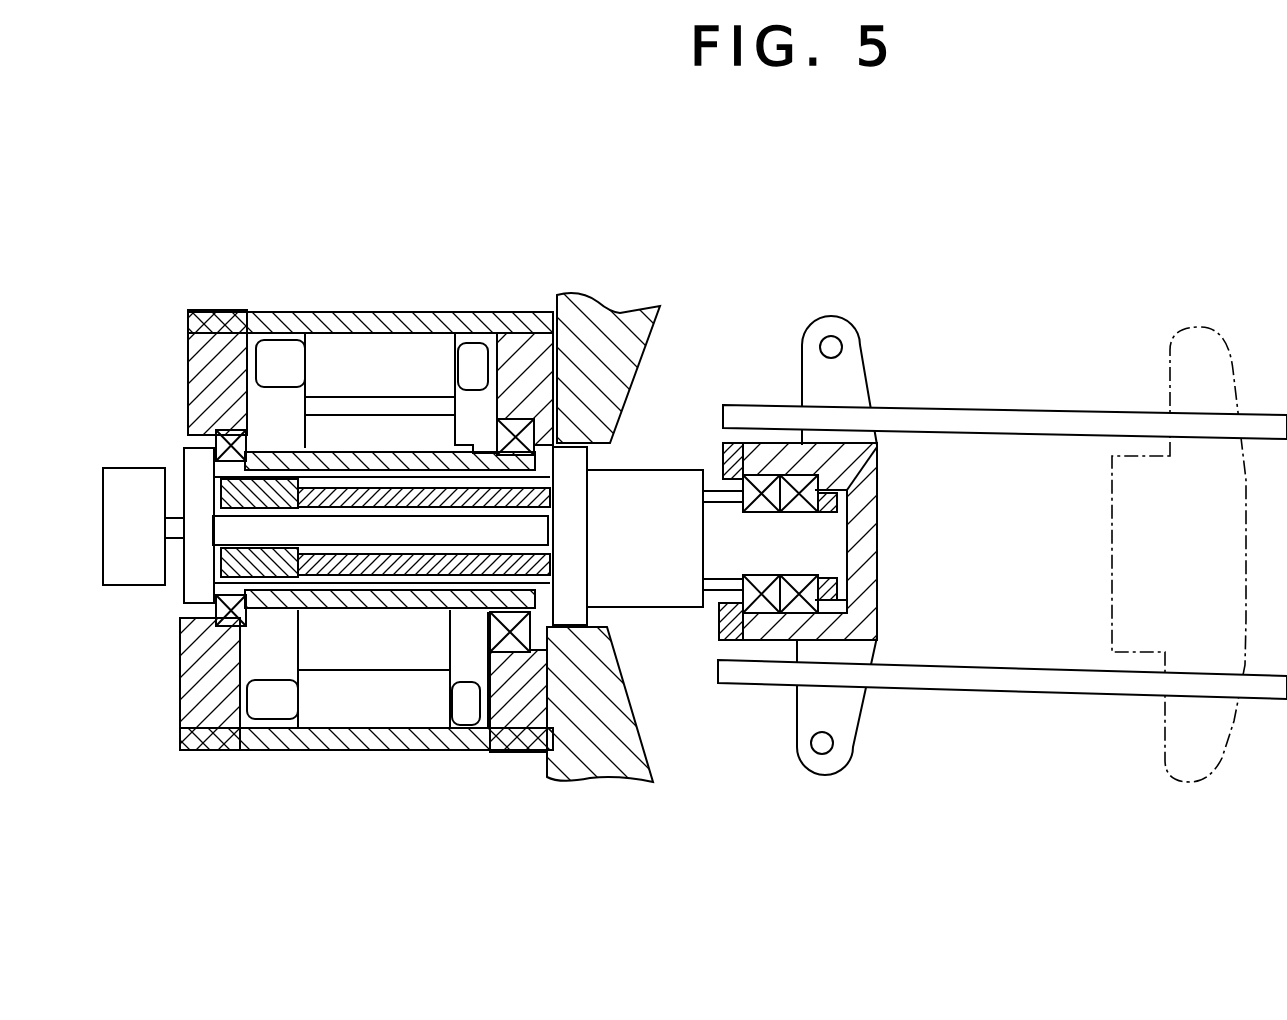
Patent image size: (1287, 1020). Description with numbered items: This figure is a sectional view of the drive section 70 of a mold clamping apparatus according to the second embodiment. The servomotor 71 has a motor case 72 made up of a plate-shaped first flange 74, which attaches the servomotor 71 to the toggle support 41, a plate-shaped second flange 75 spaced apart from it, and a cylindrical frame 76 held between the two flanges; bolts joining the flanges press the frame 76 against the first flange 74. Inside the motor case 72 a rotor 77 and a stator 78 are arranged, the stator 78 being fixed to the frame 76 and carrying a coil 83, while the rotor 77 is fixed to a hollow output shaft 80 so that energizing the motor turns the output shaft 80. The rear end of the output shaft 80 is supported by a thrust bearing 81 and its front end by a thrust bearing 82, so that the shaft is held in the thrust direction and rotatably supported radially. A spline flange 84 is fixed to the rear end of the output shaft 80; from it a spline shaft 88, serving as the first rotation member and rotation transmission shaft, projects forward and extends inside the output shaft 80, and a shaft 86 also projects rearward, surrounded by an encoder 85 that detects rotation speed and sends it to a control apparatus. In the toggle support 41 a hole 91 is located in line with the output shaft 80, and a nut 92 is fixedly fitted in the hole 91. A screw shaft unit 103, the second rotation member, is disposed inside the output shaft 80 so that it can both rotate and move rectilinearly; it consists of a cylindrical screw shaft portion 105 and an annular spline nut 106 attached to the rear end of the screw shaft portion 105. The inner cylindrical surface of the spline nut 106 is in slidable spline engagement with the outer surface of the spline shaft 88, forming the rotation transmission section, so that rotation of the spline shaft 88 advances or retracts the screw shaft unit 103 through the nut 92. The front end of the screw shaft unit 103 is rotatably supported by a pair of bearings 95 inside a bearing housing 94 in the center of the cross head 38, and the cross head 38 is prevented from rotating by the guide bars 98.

The cross head 38 is at (848, 383).
The toggle support 41 is at (630, 764).
The motor 70 is at (566, 188).
The servomotor 71 is at (400, 190).
The motor case 72 is at (250, 296).
The first flange 74 is at (535, 330).
The second flange 75 is at (188, 345).
The frame 76 is at (390, 752).
The rotor 77 is at (320, 430).
The stator 78 is at (378, 360).
The output shaft 80 is at (418, 605).
The thrust bearing 81 is at (216, 626).
The thrust bearing 82 is at (510, 652).
The coil 83 is at (470, 355).
The spline flange 84 is at (183, 588).
The encoder 85 is at (120, 478).
The shaft 86 is at (163, 527).
The spline shaft 88 is at (358, 548).
The hole 91 is at (605, 612).
The nut 92 is at (655, 478).
The bearing housing 94 is at (862, 483).
The bearings 95 is at (798, 508).
The guide bars 98 is at (1072, 415).
The screw shaft unit 103 is at (207, 845).
The screw shaft portion 105 is at (322, 568).
The spline nut 106 is at (257, 568).